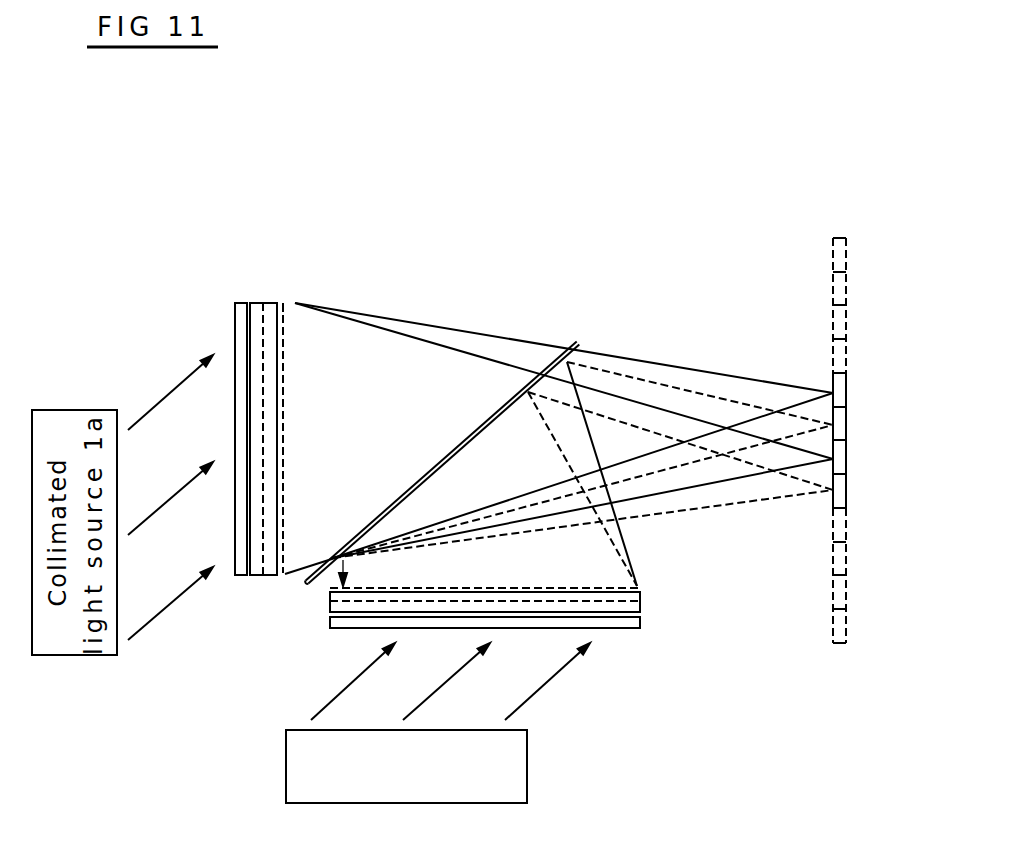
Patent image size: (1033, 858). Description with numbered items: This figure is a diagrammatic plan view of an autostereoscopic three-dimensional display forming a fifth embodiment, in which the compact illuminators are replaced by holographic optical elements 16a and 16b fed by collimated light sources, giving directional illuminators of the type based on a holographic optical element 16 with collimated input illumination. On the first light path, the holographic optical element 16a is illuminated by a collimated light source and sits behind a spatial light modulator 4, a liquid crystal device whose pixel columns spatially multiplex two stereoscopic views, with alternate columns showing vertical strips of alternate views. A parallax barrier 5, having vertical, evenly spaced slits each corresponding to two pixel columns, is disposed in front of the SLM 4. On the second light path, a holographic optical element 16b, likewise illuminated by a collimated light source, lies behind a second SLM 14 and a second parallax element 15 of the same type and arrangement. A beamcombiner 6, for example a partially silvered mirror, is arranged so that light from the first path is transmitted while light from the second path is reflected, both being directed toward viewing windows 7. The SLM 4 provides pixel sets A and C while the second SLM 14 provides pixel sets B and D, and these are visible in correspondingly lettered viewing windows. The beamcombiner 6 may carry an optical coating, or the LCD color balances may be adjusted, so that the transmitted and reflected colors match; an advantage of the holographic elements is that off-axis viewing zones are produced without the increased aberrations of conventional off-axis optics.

The spatial light modulator 4 is at (266, 302).
The parallax barrier 5 is at (290, 302).
The beamcombiner 6 is at (578, 344).
The viewing windows 7 is at (875, 623).
The second SLM 14 is at (640, 602).
The second parallax element 15 is at (640, 590).
The holographic optical element 16 is at (527, 767).
The holographic optical element 16a is at (236, 302).
The holographic optical element 16b is at (640, 628).